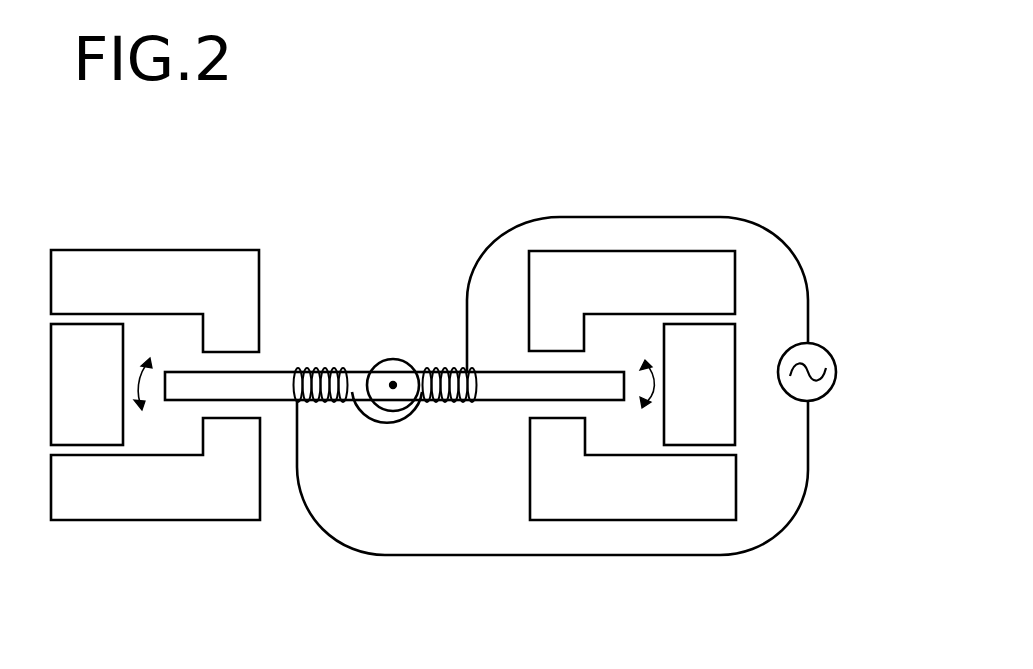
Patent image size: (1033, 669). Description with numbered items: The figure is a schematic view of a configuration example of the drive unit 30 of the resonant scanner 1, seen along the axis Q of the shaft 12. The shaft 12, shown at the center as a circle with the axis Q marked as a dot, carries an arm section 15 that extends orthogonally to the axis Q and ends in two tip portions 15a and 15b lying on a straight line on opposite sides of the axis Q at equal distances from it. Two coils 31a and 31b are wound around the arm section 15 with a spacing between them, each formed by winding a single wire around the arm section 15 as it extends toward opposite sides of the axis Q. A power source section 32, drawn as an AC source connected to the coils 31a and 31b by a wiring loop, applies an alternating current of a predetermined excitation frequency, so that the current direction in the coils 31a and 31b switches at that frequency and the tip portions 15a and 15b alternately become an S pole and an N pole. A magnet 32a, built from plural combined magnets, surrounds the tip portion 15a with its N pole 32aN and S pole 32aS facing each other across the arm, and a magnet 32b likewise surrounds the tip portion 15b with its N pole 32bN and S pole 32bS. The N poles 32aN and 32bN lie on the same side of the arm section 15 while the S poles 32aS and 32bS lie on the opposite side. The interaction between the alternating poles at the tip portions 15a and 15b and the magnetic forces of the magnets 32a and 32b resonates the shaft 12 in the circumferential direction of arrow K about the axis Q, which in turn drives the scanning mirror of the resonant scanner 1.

The resonant scanner 1 is at (392, 162).
The shaft 12 is at (392, 358).
The arm section 15 is at (503, 399).
The tip portion 15a is at (617, 377).
The tip portion 15b is at (172, 379).
The drive unit 30 is at (705, 198).
The coil 31a is at (447, 370).
The coil 31b is at (303, 370).
The power source section 32 is at (830, 347).
The magnet 32a is at (734, 288).
The N pole 32aN is at (542, 333).
The S pole 32aS is at (540, 442).
The magnet 32b is at (150, 258).
The N pole 32bN is at (246, 335).
The S pole 32bS is at (250, 433).
The axis Q is at (393, 385).
The direction of arrow K is at (145, 386).